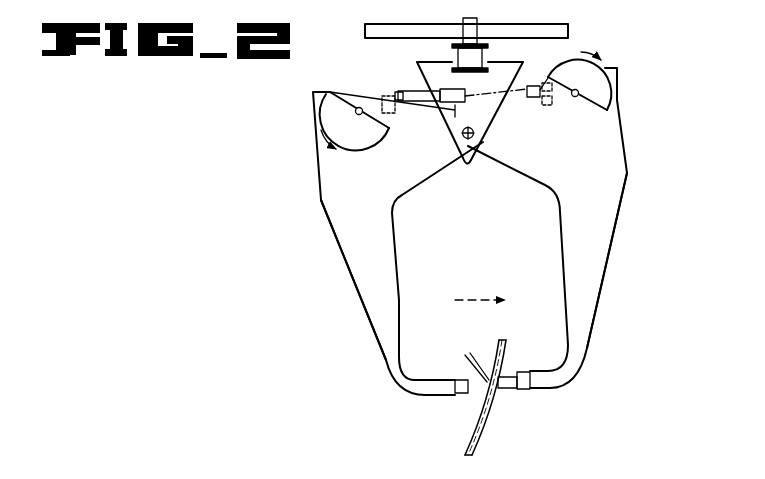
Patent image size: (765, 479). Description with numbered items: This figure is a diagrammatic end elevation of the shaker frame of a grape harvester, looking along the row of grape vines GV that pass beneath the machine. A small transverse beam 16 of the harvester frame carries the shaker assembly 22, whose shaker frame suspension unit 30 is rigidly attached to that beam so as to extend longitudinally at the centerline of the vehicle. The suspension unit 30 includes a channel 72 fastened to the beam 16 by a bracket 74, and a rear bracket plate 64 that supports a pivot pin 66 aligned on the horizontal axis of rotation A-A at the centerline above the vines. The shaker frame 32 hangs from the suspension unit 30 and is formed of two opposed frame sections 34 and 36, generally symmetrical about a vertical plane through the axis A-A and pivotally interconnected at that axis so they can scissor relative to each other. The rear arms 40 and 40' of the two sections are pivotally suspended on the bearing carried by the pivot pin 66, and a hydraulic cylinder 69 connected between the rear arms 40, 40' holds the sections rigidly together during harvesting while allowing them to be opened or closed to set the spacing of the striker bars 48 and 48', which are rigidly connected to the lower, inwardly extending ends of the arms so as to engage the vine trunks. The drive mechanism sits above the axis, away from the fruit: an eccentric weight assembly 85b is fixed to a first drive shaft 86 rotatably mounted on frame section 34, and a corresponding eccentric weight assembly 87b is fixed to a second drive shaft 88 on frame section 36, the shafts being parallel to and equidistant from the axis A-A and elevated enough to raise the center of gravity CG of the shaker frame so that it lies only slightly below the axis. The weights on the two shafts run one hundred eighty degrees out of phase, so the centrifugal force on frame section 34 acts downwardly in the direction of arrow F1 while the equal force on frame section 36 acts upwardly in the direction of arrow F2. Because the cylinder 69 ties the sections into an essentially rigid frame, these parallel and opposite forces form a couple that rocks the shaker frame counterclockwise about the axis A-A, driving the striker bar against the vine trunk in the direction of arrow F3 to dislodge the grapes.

The small beam 16 is at (568, 30).
The shaker assembly 22 is at (660, 61).
The shaker frame suspension unit 30 is at (413, 67).
The shaker frame 32 is at (628, 173).
The frame section 34 is at (352, 279).
The frame section 36 is at (603, 285).
The rear arm 40 is at (338, 249).
The rear arm 40' is at (613, 241).
The striker bar 48 is at (443, 405).
The striker bar 48' is at (532, 392).
The bracket plate 64 is at (461, 167).
The pivot pin 66 is at (464, 136).
The hydraulic cylinder 69 is at (455, 116).
The channel 72 is at (480, 57).
The bracket 74 is at (473, 24).
The eccentric weight assembly 85b is at (323, 108).
The first drive shaft 86 is at (360, 107).
The eccentric weight assembly 87b is at (612, 100).
The second drive shaft 88 is at (571, 104).
The axis of rotation A-A is at (474, 133).
The center of gravity CG is at (482, 148).
The arrow F1 is at (346, 130).
The arrow F2 is at (575, 96).
The arrow F3 is at (473, 387).
The grape vines GV is at (481, 418).